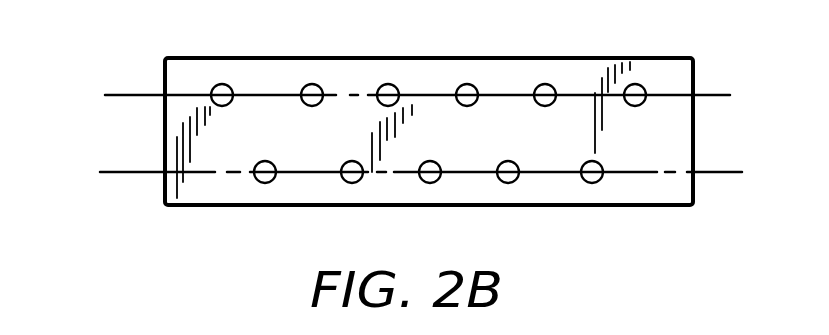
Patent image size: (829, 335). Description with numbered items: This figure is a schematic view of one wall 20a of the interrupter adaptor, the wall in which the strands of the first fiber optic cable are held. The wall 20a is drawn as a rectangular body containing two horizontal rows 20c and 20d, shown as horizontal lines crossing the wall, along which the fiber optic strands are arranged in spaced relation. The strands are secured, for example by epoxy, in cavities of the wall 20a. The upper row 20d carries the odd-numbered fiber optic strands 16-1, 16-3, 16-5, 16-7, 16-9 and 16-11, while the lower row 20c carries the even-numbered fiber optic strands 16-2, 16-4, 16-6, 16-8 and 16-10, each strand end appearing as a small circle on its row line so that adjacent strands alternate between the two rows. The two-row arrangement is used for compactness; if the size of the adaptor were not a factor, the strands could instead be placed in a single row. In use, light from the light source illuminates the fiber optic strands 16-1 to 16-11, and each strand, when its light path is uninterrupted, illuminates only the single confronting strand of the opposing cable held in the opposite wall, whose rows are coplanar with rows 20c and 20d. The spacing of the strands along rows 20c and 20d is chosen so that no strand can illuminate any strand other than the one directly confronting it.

The wall 20a is at (187, 68).
The horizontal row 20c is at (389, 159).
The horizontal row 20d is at (385, 89).
The fiber optic strand 16-1 is at (227, 84).
The fiber optic strand 16-2 is at (264, 184).
The fiber optic strand 16-3 is at (313, 84).
The fiber optic strand 16-4 is at (352, 183).
The fiber optic strand 16-5 is at (388, 84).
The fiber optic strand 16-6 is at (430, 183).
The fiber optic strand 16-7 is at (466, 89).
The fiber optic strand 16-8 is at (508, 183).
The fiber optic strand 16-9 is at (547, 88).
The fiber optic strand 16-10 is at (600, 183).
The fiber optic strand 16-11 is at (640, 93).